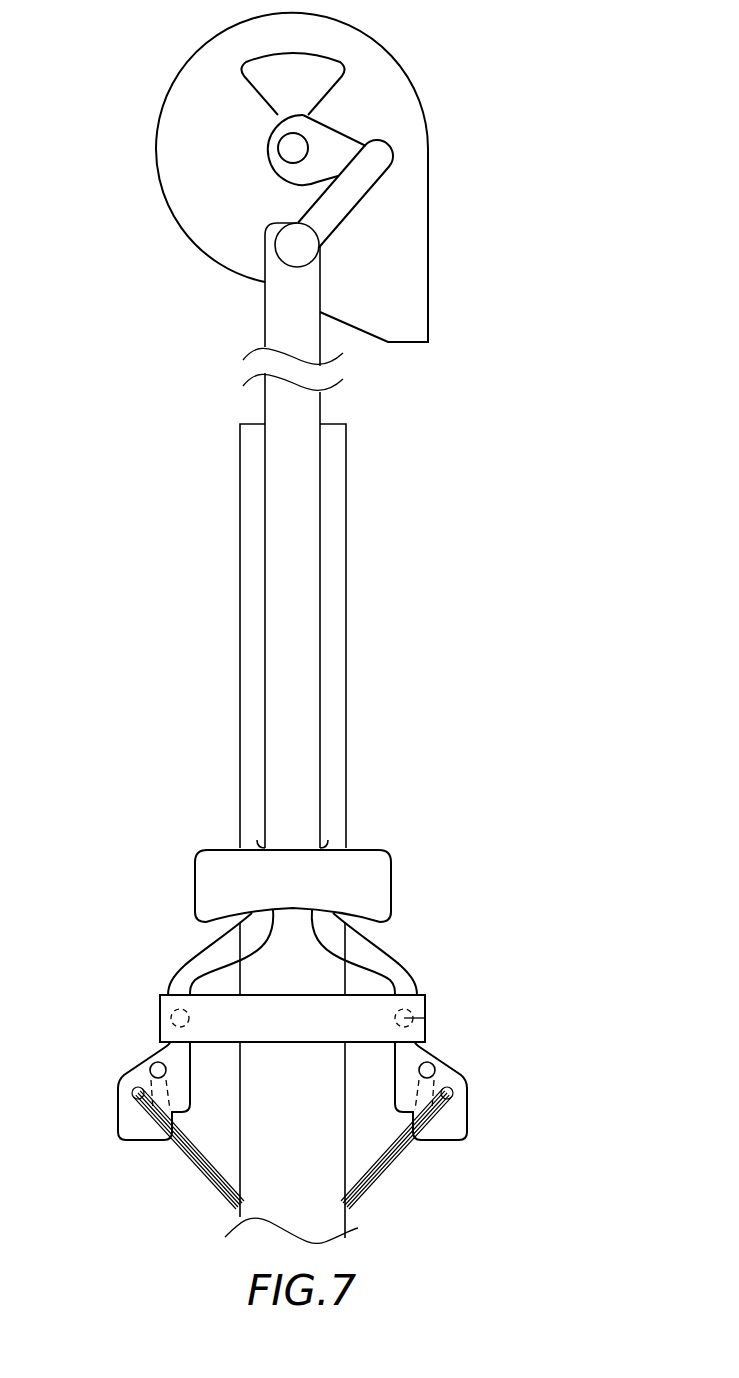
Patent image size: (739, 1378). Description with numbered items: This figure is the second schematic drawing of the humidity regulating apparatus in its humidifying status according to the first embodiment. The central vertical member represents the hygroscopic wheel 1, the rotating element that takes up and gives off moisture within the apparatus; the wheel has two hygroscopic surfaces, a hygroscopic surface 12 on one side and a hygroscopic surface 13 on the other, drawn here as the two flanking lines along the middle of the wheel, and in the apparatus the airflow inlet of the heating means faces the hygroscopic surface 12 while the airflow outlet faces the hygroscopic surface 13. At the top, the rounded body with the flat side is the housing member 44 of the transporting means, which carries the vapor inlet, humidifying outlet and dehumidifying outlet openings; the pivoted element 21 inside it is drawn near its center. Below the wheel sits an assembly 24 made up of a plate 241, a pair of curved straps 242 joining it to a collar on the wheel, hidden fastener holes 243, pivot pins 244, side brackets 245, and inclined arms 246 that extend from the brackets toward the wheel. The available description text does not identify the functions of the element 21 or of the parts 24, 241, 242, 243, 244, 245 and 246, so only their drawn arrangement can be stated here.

The hygroscopic wheel 1 is at (333, 605).
The hygroscopic surface 12 is at (240, 527).
The hygroscopic surface 13 is at (346, 527).
The crank lever and hub 21 is at (335, 148).
The housing member 44 is at (403, 235).
The anchoring assembly 24 is at (379, 941).
The mounting plate 241 is at (413, 997).
The connecting straps 242 is at (380, 963).
The fastener holes 243 is at (360, 1002).
The pivot pins 244 is at (158, 1066).
The brackets 245 is at (157, 1137).
The pivoting arms 246 is at (197, 1155).